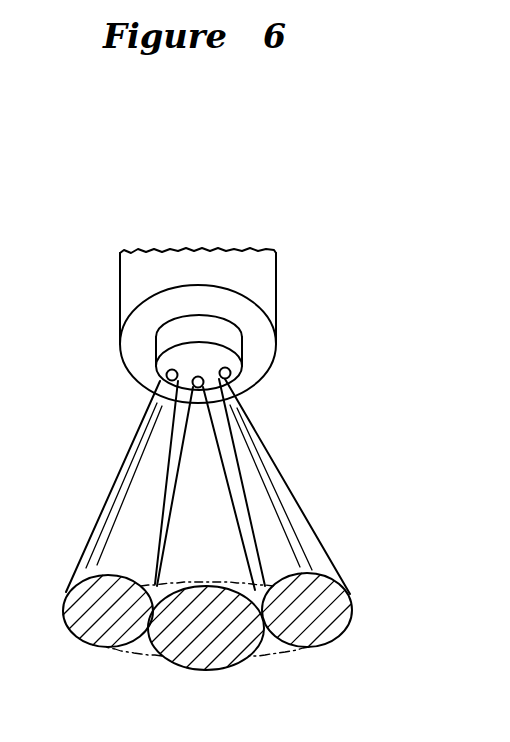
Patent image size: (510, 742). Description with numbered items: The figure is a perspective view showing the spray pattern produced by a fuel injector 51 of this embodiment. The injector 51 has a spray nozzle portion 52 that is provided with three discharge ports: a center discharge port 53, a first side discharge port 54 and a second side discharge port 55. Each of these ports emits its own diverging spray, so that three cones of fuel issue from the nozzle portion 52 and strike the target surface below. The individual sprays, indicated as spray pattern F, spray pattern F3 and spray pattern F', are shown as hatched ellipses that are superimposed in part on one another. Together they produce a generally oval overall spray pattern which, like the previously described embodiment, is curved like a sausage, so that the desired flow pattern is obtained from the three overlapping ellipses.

The fuel injector 51 is at (98, 284).
The spray nozzle portion 52 is at (232, 341).
The center discharge port 53 is at (160, 420).
The first side discharge port 54 is at (236, 378).
The second side discharge port 55 is at (166, 376).
The spray pattern F is at (249, 548).
The spray pattern F3 is at (117, 518).
The spray pattern F' is at (212, 656).